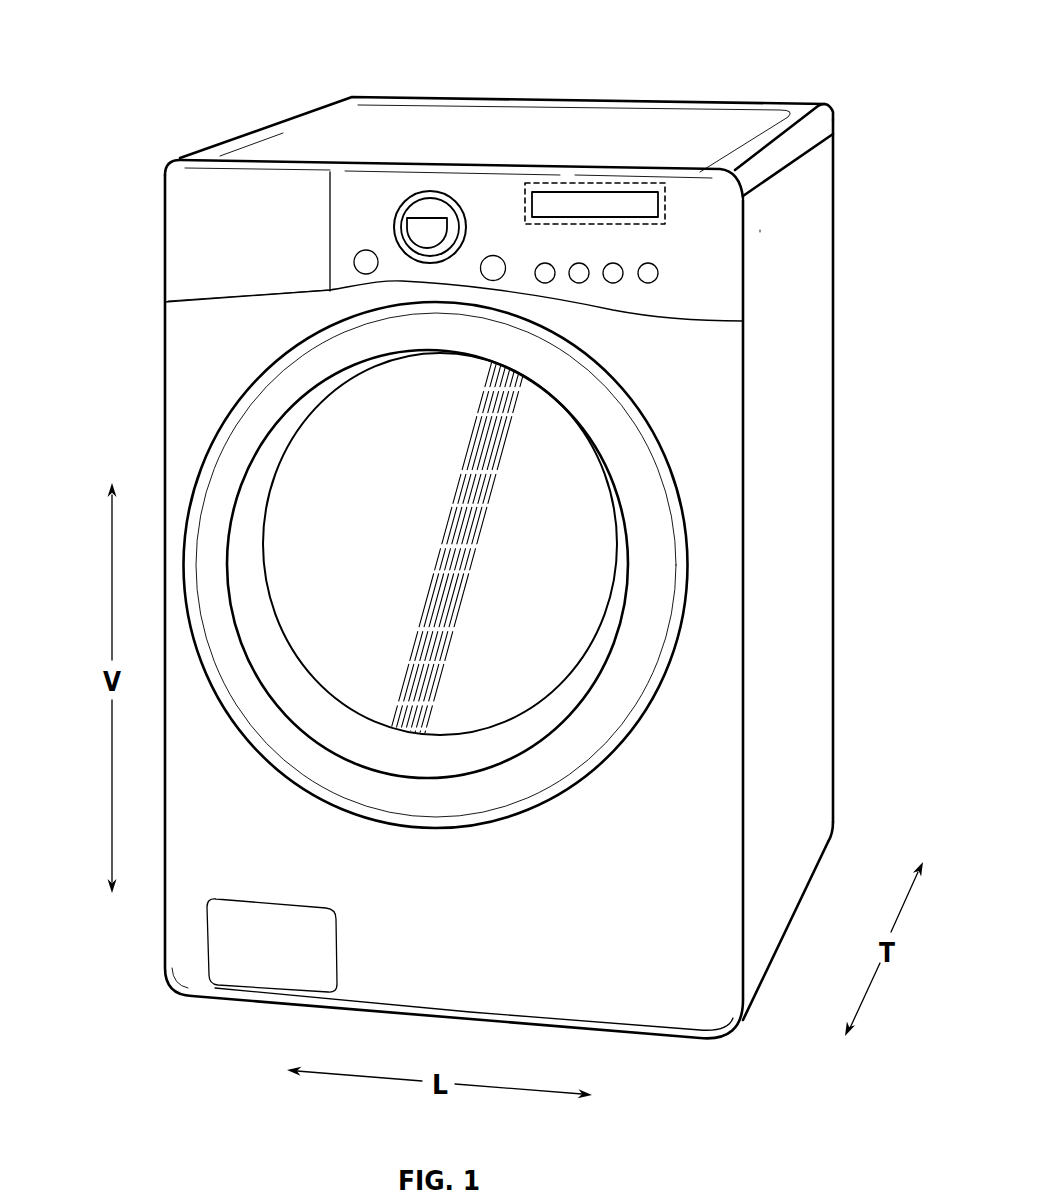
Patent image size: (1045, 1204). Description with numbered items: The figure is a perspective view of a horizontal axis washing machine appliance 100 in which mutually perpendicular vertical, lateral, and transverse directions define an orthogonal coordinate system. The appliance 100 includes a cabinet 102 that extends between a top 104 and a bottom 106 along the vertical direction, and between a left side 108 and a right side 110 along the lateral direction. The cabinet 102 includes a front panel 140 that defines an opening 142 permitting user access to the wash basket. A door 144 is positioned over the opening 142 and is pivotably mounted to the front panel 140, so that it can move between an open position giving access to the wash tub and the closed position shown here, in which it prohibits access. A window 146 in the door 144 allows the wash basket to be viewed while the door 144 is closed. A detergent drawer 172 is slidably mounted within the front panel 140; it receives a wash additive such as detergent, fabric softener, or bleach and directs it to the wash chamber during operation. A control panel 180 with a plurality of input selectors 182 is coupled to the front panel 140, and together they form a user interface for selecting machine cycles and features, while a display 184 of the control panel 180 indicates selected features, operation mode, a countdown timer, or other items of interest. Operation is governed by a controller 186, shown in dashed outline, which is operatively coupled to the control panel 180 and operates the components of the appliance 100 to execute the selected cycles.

The washing machine appliance 100 is at (139, 70).
The cabinet 102 is at (812, 434).
The top 104 is at (852, 112).
The bottom 106 is at (833, 878).
The left side 108 is at (170, 1000).
The right side 110 is at (738, 1045).
The front panel 140 is at (185, 365).
The opening 142 is at (647, 418).
The door 144 is at (658, 520).
The window 146 is at (535, 676).
The detergent drawer 172 is at (185, 200).
The control panel 180 is at (501, 207).
The input selectors 182 is at (425, 216).
The display 184 is at (608, 203).
The controller 186 is at (586, 182).